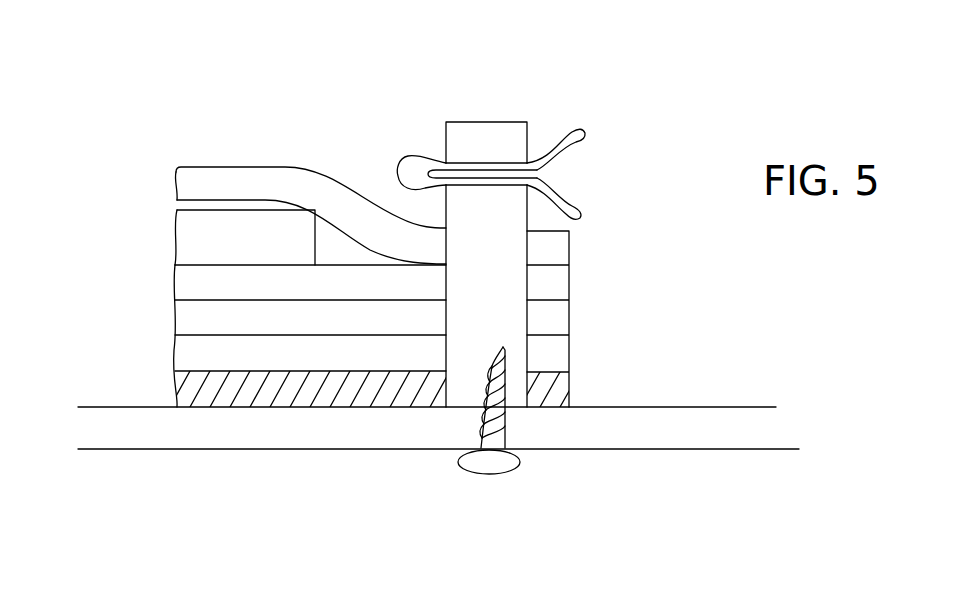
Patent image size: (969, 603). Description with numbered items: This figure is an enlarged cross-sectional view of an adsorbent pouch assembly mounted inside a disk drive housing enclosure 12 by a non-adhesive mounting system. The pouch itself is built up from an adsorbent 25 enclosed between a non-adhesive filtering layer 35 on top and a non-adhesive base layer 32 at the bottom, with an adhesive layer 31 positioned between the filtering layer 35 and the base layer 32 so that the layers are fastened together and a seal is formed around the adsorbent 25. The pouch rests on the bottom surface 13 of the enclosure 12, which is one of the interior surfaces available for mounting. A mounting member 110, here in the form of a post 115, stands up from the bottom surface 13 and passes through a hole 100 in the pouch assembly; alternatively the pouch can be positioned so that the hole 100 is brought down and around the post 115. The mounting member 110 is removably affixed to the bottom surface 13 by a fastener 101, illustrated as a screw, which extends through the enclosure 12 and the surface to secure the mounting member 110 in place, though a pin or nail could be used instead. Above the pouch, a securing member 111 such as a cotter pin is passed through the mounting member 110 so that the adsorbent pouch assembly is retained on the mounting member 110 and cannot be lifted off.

The housing enclosure 12 is at (672, 449).
The bottom surface 13 is at (618, 407).
The adsorbent 25 is at (190, 238).
The adhesive layer 31 is at (577, 266).
The base layer 32 is at (183, 392).
The filtering layer 35 is at (235, 178).
The hole 100 is at (528, 231).
The fastener 101 is at (475, 473).
The mounting member 110 is at (465, 122).
The securing member 111 is at (580, 130).
The post 115 is at (507, 122).